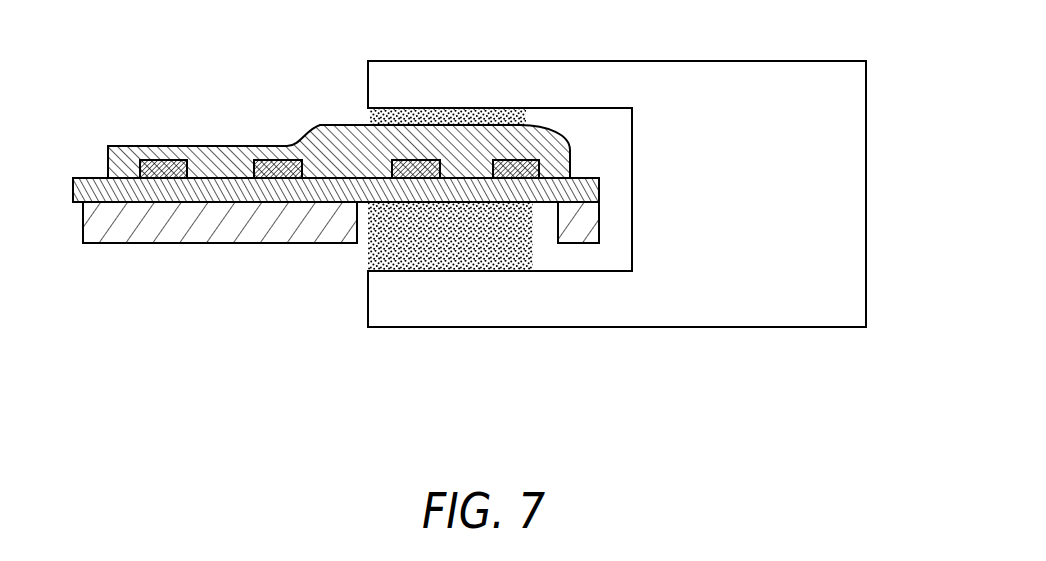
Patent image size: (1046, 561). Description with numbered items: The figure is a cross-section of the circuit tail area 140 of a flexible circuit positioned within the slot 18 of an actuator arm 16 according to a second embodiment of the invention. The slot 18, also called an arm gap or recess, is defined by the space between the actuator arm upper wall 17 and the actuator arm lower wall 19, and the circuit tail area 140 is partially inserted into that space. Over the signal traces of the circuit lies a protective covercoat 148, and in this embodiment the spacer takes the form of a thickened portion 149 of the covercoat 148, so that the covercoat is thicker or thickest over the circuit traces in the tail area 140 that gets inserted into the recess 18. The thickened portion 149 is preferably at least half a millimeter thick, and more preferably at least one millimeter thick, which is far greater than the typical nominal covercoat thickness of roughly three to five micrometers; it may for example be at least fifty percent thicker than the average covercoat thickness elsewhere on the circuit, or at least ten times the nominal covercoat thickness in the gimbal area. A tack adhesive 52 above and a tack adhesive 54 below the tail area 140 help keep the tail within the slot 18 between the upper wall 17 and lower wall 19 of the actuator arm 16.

The actuator arm 16 is at (880, 100).
The actuator arm upper wall 17 is at (422, 60).
The slot 18 is at (543, 253).
The actuator arm lower wall 19 is at (413, 315).
The tack adhesive 52 is at (367, 115).
The tack adhesive 54 is at (400, 252).
The circuit tail area 140 is at (90, 137).
The covercoat 148 is at (177, 146).
The thickened portion of the covercoat 149 is at (291, 140).